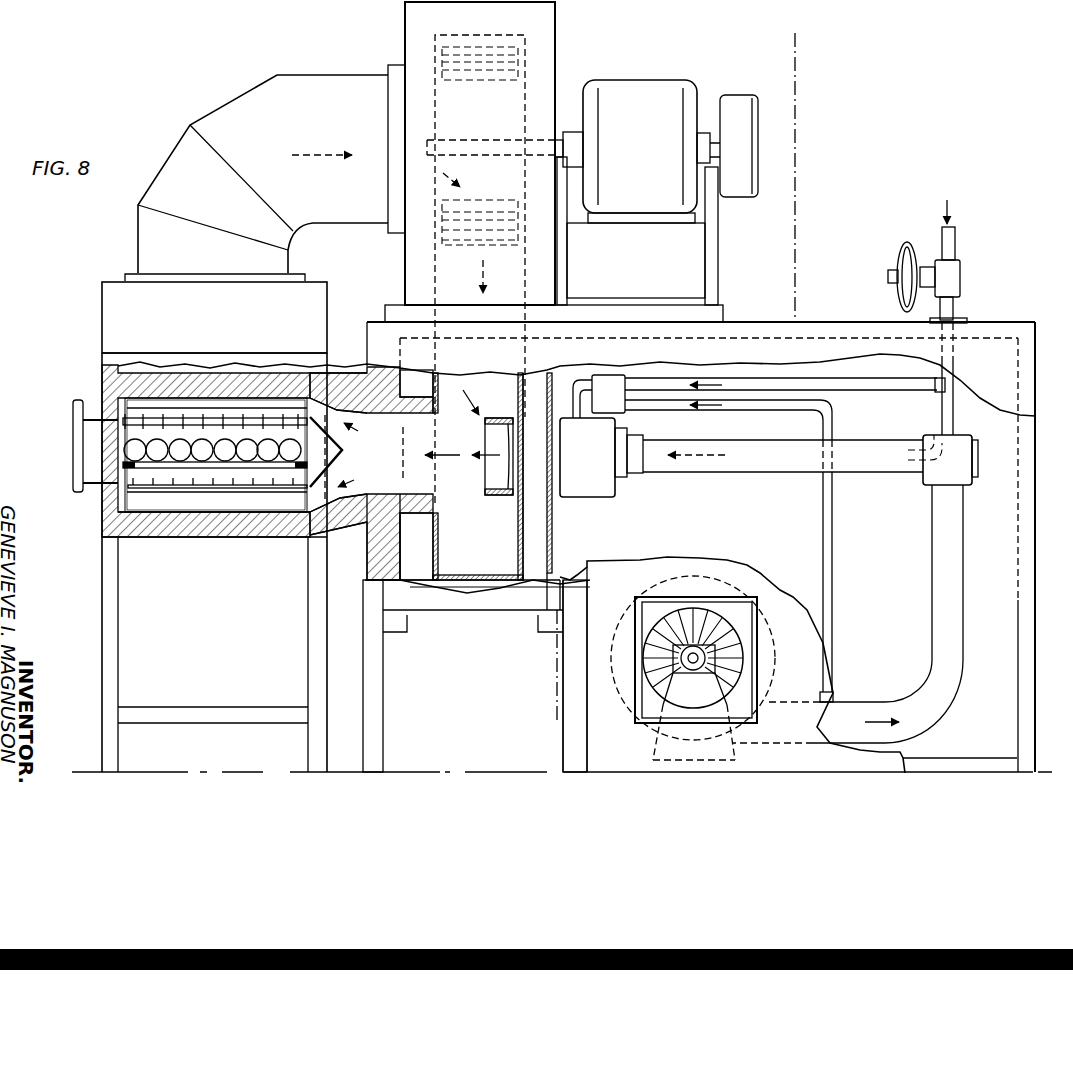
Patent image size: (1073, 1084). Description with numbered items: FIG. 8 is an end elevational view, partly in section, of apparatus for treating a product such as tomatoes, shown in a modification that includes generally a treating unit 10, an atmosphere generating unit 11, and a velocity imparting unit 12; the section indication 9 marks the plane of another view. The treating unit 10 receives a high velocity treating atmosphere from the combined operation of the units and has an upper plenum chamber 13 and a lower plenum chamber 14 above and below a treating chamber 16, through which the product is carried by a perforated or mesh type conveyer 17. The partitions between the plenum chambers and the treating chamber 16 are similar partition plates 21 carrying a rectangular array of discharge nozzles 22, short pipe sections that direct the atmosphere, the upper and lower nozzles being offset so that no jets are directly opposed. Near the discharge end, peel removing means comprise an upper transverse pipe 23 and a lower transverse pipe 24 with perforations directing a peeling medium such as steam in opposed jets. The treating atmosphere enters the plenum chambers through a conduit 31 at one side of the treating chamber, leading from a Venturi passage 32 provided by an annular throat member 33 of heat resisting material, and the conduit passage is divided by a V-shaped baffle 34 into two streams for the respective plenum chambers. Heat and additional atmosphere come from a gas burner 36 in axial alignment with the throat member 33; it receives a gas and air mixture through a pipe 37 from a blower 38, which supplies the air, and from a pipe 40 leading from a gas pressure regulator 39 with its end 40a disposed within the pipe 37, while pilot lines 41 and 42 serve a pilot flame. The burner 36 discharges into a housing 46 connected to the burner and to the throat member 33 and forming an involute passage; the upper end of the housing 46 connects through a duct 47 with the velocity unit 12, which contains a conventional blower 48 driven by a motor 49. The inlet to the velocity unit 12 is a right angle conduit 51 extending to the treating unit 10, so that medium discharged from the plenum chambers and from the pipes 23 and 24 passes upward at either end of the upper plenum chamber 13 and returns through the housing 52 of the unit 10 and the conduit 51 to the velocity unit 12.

The section line 9- 9 is at (797, 50).
The treating unit 10 is at (65, 406).
The atmosphere generating unit 11 is at (527, 640).
The velocity imparting unit 12 is at (580, 67).
The upper plenum chamber 13 is at (188, 410).
The lower plenum chamber 14 is at (218, 500).
The treating chamber 16 is at (236, 440).
The conveyer 17 is at (253, 468).
The partition plates 21 is at (280, 489).
The discharge nozzles 22 is at (102, 530).
The upper transverse pipe 23 is at (152, 416).
The lower transverse pipe 24 is at (297, 489).
The conduit 31 is at (353, 525).
The Venturi passage 32 is at (405, 473).
The annular throat member 33 is at (383, 540).
The V-shaped baffle 34 is at (322, 395).
The gas burner 36 is at (615, 490).
The pipe 37 is at (720, 470).
The blower 38 is at (748, 598).
The gas pressure regulator 39 is at (950, 268).
The pipe 40 is at (955, 412).
The end of pipe 40a is at (915, 465).
The pilot line 41 is at (903, 383).
The pilot line 42 is at (833, 547).
The housing 46 is at (473, 582).
The duct 47 is at (538, 296).
The blower 48 is at (517, 70).
The motor 49 is at (672, 87).
The right angle conduit 51 is at (232, 105).
The housing 52 is at (327, 350).